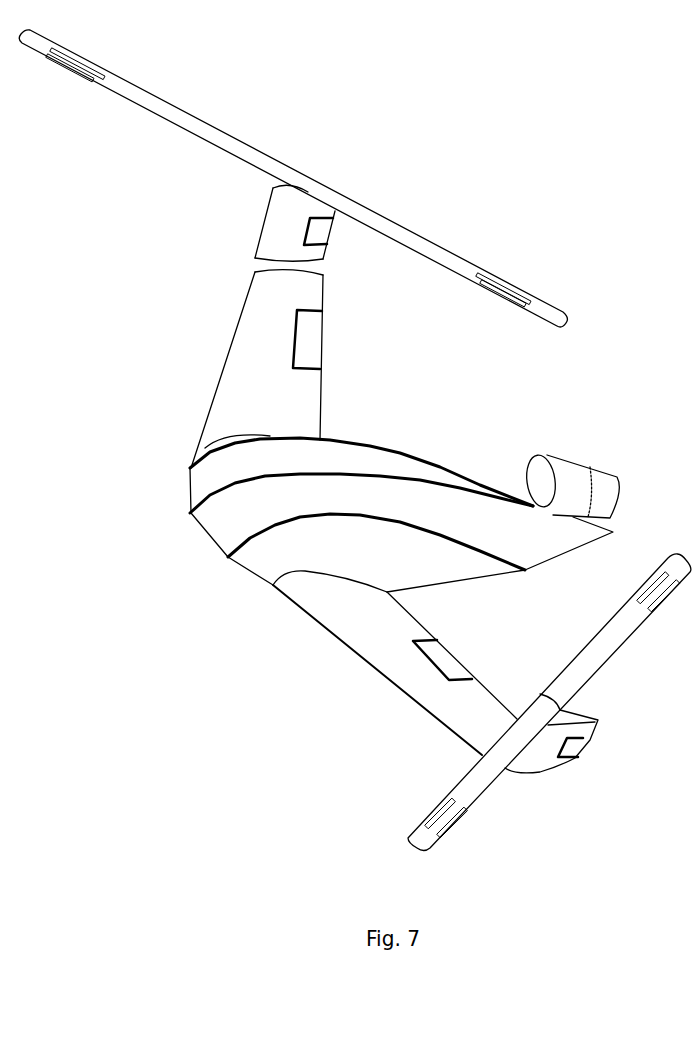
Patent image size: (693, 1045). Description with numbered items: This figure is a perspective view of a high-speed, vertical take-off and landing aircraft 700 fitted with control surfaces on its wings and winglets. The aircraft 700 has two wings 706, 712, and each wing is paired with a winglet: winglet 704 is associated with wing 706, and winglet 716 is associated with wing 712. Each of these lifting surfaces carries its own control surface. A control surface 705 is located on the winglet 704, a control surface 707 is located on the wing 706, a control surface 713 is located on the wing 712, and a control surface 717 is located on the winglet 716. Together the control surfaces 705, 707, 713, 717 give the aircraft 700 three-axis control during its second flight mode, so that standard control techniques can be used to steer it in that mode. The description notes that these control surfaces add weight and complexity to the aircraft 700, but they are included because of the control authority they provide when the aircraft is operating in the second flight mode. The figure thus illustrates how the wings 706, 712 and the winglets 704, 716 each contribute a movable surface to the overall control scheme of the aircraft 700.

The high-speed, vertical take-off and landing aircraft 700 is at (146, 391).
The winglet 704 is at (263, 210).
The control surface 705 is at (331, 228).
The wing 706 is at (238, 312).
The control surface 707 is at (320, 342).
The wing 712 is at (372, 667).
The control surface 713 is at (458, 658).
The winglet 716 is at (523, 760).
The control surface 717 is at (580, 743).